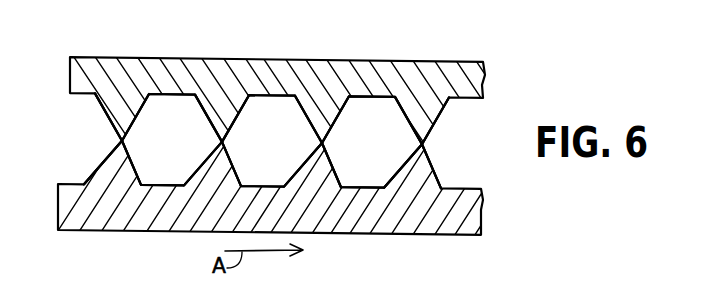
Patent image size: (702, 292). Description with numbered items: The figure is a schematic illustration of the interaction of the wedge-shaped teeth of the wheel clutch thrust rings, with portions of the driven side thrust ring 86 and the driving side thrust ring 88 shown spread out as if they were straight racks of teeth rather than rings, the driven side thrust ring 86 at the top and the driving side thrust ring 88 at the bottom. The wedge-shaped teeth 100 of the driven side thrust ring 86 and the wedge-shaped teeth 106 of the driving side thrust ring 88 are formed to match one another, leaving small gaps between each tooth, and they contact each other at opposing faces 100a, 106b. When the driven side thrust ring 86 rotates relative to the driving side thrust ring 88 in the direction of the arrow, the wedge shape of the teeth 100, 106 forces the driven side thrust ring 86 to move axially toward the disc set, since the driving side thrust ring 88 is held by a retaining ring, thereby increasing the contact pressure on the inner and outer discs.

The driven side thrust ring 86 is at (427, 68).
The driving side thrust ring 88 is at (468, 236).
The wedge-shaped teeth 100 is at (212, 92).
The opposing face 100a is at (411, 126).
The wedge-shaped teeth 106 is at (412, 176).
The opposing face 106b is at (129, 163).